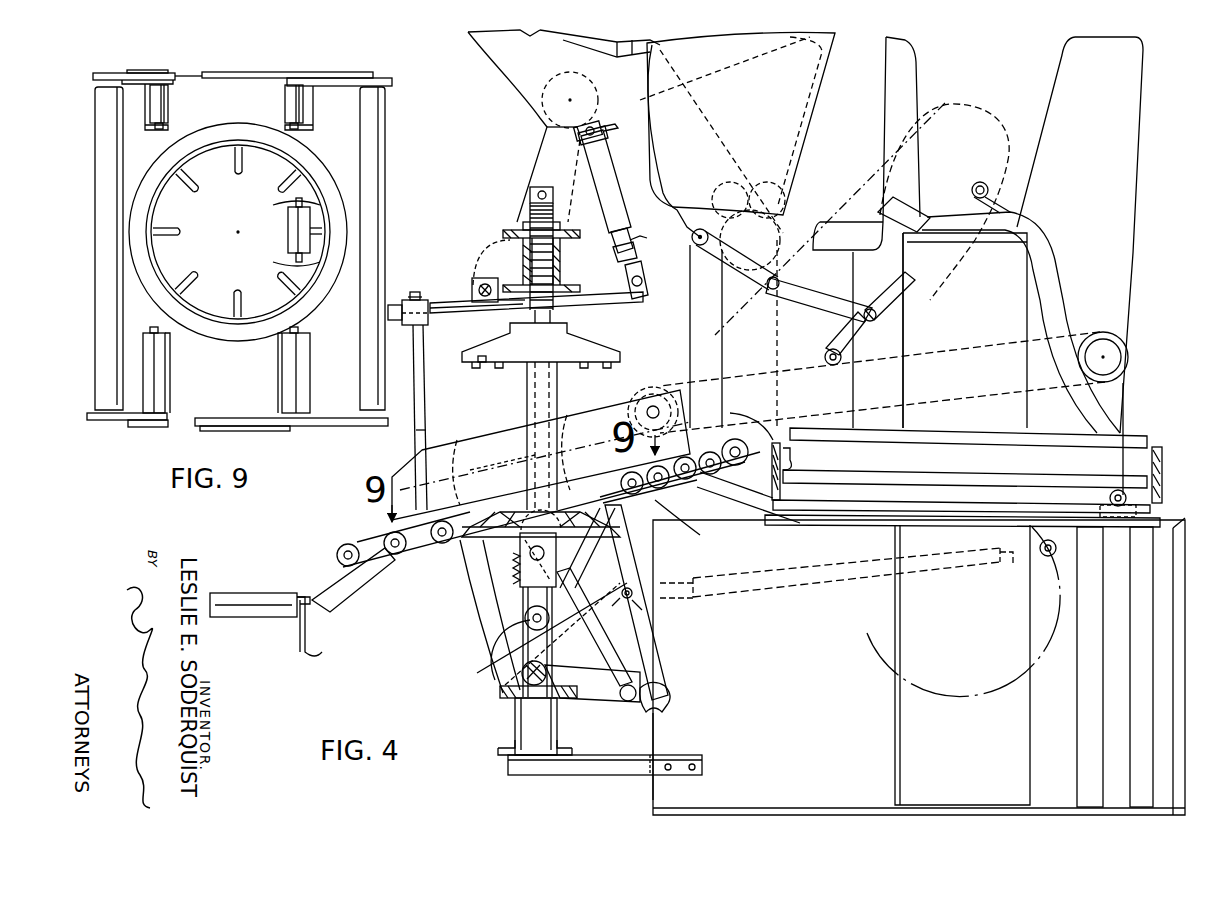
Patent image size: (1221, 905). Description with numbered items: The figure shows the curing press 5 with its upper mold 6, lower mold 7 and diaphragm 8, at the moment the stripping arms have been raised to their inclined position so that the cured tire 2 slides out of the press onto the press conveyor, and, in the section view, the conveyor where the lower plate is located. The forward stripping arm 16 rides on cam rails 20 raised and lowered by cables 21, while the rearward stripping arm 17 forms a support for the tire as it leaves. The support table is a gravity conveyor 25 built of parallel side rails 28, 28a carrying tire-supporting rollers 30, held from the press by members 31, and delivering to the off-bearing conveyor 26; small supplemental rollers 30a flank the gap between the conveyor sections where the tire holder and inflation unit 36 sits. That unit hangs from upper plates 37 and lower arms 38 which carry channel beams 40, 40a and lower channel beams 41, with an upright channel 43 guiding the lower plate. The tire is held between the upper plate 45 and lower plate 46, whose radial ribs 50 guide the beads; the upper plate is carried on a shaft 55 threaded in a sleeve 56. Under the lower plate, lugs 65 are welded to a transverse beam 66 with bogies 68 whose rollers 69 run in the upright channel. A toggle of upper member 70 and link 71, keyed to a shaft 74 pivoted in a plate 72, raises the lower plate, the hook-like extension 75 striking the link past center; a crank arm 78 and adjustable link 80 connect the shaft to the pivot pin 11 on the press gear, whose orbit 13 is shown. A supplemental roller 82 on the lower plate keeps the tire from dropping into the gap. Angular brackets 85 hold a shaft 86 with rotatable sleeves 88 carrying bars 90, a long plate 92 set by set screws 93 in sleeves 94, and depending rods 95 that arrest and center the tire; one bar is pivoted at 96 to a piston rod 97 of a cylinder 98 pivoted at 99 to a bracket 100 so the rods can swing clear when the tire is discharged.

In FIG. 4, the tire 2 is at (985, 130).
In FIG. 4, the curing press 5 is at (1150, 148).
In FIG. 4, the upper mold 6 is at (815, 80).
In FIG. 4, the lower mold 7 is at (1140, 440).
In FIG. 4, the diaphragm 8 is at (1020, 332).
In FIG. 4, the pivot pin 11 is at (1040, 556).
In FIG. 4, the orbit 13 is at (968, 700).
In FIG. 4, the forward stripping arm 16 is at (990, 190).
In FIG. 4, the rearward stripping arm 17 is at (890, 302).
In FIG. 4, the cam rails 20 is at (1050, 245).
In FIG. 4, the cables 21 is at (880, 372).
In FIG. 9, the gravity conveyor 25 is at (397, 83).
In FIG. 4, the gravity conveyor 25 is at (356, 542).
In FIG. 4, the off-bearing conveyor 26 is at (308, 631).
In FIG. 9, the side rail 28 is at (382, 74).
In FIG. 4, the side rail 28 is at (650, 502).
In FIG. 9, the side rail 28a is at (122, 62).
In FIG. 4, the side rail 28a is at (386, 562).
In FIG. 9, the tire-supporting rollers 30 is at (375, 225).
In FIG. 4, the tire-supporting rollers 30 is at (445, 532).
In FIG. 9, the supplemental rollers 30a is at (165, 108).
In FIG. 4, the supplemental rollers 30a is at (570, 425).
In FIG. 4, the members 31 is at (480, 622).
In FIG. 4, the tire holder and inflation unit 36 is at (490, 240).
In FIG. 4, the upper plates 37 is at (605, 296).
In FIG. 4, the lower arms 38 is at (700, 766).
In FIG. 4, the channel beam 40 is at (515, 252).
In FIG. 4, the channel beam 40a is at (560, 263).
In FIG. 4, the lower channel beams 41 is at (515, 723).
In FIG. 4, the upright channel 43 is at (525, 412).
In FIG. 4, the upper plate 45 is at (600, 345).
In FIG. 4, the lower plate 46 is at (496, 506).
In FIG. 4, the radial ribs 50 is at (495, 362).
In FIG. 4, the shaft 55 is at (553, 222).
In FIG. 4, the sleeve 56 is at (520, 228).
In FIG. 4, the lugs 65 is at (556, 552).
In FIG. 4, the transverse beam 66 is at (518, 566).
In FIG. 4, the bogies 68 is at (527, 598).
In FIG. 4, the rollers 69 is at (515, 638).
In FIG. 4, the upper toggle member 70 is at (640, 672).
In FIG. 4, the link 71 is at (598, 690).
In FIG. 4, the plate 72 is at (520, 686).
In FIG. 4, the shaft 74 is at (525, 673).
In FIG. 4, the hook-like extension 75 is at (668, 704).
In FIG. 4, the crank arm 78 is at (640, 612).
In FIG. 4, the adjustable link 80 is at (797, 597).
In FIG. 4, the supplemental roller 82 is at (680, 520).
In FIG. 4, the angular brackets 85 is at (503, 234).
In FIG. 4, the shaft 86 is at (472, 292).
In FIG. 4, the sleeves 88 is at (490, 303).
In FIG. 4, the bars 90 is at (455, 313).
In FIG. 4, the long plate 92 is at (412, 328).
In FIG. 4, the set screws 93 is at (417, 292).
In FIG. 4, the sleeves 94 is at (407, 300).
In FIG. 4, the rods 95 is at (424, 415).
In FIG. 4, the pivot 96 is at (647, 280).
In FIG. 4, the piston rod 97 is at (625, 252).
In FIG. 4, the cylinder 98 is at (597, 162).
In FIG. 4, the pivot 99 is at (592, 127).
In FIG. 4, the bracket 100 is at (548, 152).